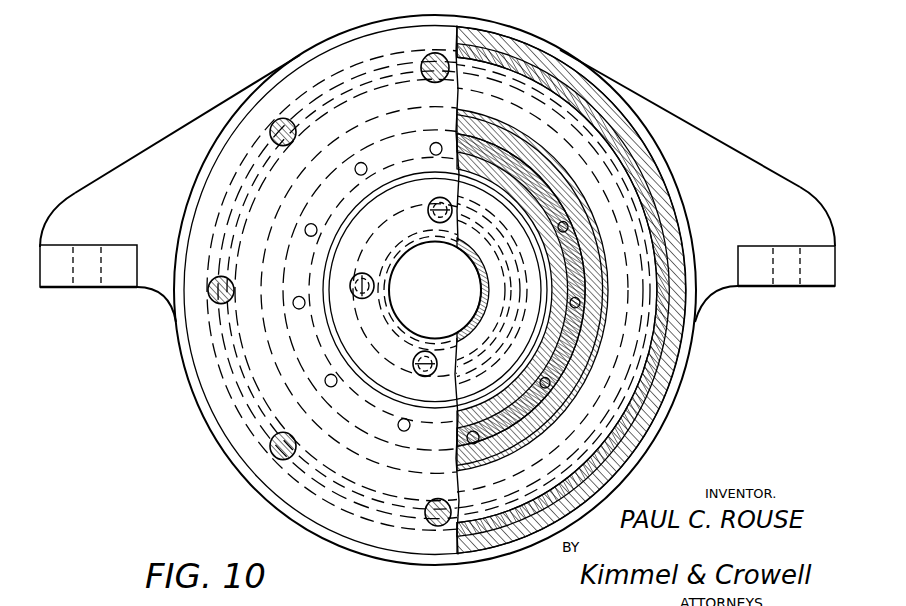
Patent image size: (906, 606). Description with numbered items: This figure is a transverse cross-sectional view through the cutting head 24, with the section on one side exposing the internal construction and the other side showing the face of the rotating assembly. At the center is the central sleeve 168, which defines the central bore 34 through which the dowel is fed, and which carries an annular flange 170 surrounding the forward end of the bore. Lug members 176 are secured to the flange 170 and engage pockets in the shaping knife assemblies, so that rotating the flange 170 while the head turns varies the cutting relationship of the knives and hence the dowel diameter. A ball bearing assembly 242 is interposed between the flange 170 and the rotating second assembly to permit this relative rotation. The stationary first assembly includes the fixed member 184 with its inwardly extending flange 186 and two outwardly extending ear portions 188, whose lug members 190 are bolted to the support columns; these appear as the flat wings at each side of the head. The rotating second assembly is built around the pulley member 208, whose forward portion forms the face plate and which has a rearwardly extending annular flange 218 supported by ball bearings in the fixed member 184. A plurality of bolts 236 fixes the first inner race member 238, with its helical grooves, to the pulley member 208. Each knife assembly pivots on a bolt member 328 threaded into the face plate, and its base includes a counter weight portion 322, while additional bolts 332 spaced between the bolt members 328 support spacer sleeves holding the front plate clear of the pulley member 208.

The cutting head 24 is at (648, 80).
The central bore 34 is at (435, 290).
The central sleeve 168 is at (435, 290).
The annular flange 170 is at (435, 290).
The lug members 176 is at (433, 286).
The fixed member 184 is at (212, 112).
The inwardly extending flange 186 is at (571, 290).
The ear portions 188 is at (84, 190).
The lug members 190 is at (114, 250).
The pulley member 208 is at (435, 290).
The rearwardly extending annular flange 218 is at (532, 290).
The bolts 236 is at (436, 292).
The first inner race member 238 is at (473, 290).
The ball bearing assembly 242 is at (521, 290).
The counter weight portion 322 is at (438, 512).
The bolt members 328 is at (283, 288).
The additional bolts 332 is at (328, 178).